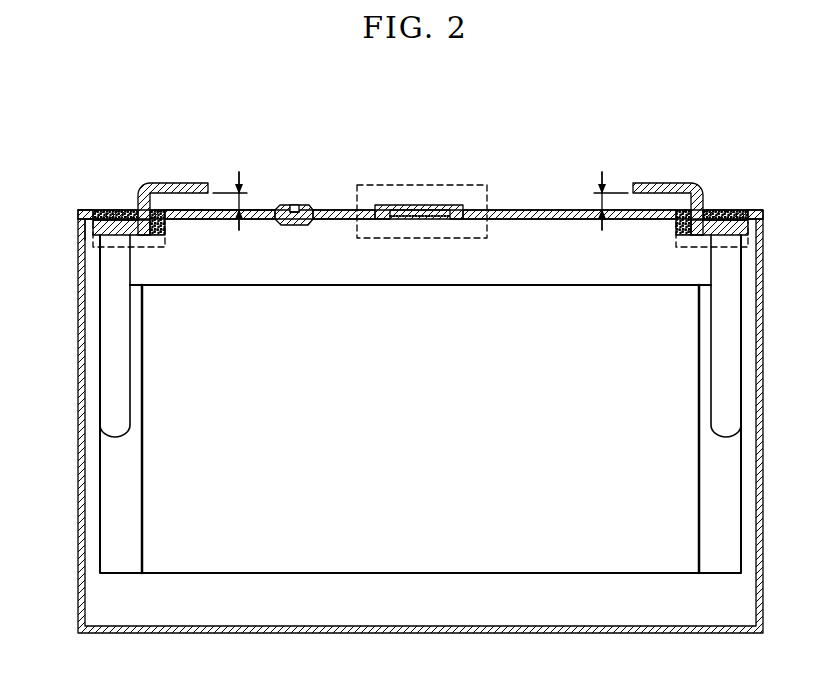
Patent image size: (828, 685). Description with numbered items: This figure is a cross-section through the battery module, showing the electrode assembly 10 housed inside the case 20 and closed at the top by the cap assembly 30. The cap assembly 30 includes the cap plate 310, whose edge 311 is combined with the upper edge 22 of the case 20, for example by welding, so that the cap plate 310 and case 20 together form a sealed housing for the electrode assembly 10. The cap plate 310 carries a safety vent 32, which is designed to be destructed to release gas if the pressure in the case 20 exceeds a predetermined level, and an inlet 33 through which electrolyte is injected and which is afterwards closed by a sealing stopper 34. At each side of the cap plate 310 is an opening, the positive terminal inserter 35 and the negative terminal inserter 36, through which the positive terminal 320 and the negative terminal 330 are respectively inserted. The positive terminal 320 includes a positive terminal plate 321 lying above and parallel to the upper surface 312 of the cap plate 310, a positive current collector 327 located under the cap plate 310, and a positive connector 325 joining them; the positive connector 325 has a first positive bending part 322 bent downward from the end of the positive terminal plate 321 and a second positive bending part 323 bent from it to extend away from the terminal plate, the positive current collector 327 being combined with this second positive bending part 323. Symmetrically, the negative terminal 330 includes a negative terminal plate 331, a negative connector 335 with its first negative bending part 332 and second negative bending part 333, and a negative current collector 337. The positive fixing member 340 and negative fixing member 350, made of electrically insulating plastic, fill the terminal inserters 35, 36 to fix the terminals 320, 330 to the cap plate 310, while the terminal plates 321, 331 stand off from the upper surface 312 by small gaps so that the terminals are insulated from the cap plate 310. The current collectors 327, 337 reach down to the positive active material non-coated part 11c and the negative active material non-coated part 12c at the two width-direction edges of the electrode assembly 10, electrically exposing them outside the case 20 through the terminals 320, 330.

The electrode assembly 10 is at (420, 454).
The positive active material non-coated part 11c is at (120, 560).
The negative active material non-coated part 12c is at (720, 558).
The case 20 is at (763, 557).
The upper edge 22 is at (84, 230).
The cap assembly 30 is at (412, 388).
The cap plate 310 is at (553, 210).
The edge 311 is at (78, 211).
The upper surface 312 is at (343, 210).
The safety vent 32 is at (412, 213).
The inlet 33 is at (292, 225).
The sealing stopper 34 is at (294, 216).
The positive terminal inserter 35 is at (90, 210).
The negative terminal inserter 36 is at (740, 208).
The positive terminal 320 is at (161, 232).
The positive terminal plate 321 is at (179, 183).
The first positive bending part 322 is at (160, 236).
The second positive bending part 323 is at (115, 235).
The positive connector 325 is at (173, 285).
The positive current collector 327 is at (107, 387).
The negative terminal 330 is at (689, 237).
The negative terminal plate 331 is at (665, 183).
The first negative bending part 332 is at (681, 237).
The second negative bending part 333 is at (727, 235).
The negative connector 335 is at (673, 285).
The negative current collector 337 is at (735, 387).
The positive fixing member 340 is at (112, 211).
The negative fixing member 350 is at (718, 208).